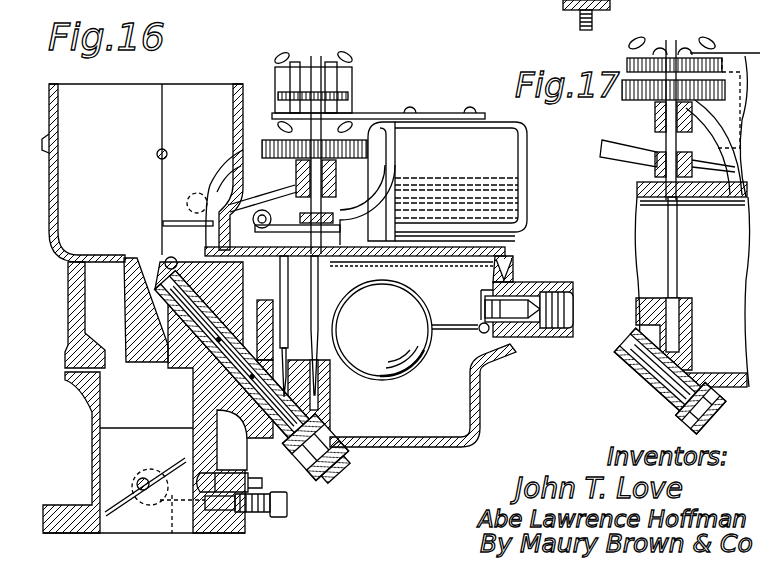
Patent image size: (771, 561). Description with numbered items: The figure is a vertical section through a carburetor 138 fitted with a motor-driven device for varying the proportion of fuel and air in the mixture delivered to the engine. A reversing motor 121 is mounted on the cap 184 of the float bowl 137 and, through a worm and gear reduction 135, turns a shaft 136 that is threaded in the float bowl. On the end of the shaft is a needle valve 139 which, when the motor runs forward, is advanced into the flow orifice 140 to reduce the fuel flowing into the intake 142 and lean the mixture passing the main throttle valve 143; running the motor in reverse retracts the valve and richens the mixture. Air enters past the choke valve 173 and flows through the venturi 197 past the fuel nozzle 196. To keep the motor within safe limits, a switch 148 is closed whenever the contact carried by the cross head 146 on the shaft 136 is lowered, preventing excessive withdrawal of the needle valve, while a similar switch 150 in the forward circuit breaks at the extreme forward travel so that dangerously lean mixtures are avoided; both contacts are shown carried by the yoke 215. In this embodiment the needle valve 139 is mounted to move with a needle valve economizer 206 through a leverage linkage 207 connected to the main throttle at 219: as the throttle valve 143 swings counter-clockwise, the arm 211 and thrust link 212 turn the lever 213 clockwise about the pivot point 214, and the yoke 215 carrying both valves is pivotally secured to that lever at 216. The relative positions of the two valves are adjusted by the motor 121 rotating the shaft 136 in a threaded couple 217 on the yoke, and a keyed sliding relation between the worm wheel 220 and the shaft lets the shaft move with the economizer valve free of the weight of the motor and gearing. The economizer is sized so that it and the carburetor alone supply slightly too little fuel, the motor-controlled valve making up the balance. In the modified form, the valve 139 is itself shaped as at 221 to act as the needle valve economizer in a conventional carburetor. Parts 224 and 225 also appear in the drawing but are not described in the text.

In FIG. 16, the motor 121 is at (437, 132).
In FIG. 17, the motor 121 is at (745, 62).
In FIG. 16, the worm and gear reduction 135 is at (240, 118).
In FIG. 16, the shaft 136 is at (340, 203).
In FIG. 16, the float bowl 137 is at (482, 410).
In FIG. 16, the carburetor 138 is at (65, 306).
In FIG. 16, the needle valve 139 is at (317, 332).
In FIG. 17, the needle valve 139 is at (580, 22).
In FIG. 16, the flow orifice 140 is at (318, 398).
In FIG. 16, the intake 142 is at (100, 418).
In FIG. 16, the main throttle valve 143 is at (165, 470).
In FIG. 16, the cross head 146 is at (278, 95).
In FIG. 16, the switch 148 is at (332, 80).
In FIG. 16, the switch 150 is at (298, 76).
In FIG. 16, the choke valve 173 is at (160, 112).
In FIG. 16, the cap 184 is at (512, 256).
In FIG. 16, the fuel nozzle 196 is at (158, 262).
In FIG. 16, the venturi 197 is at (135, 362).
In FIG. 16, the needle valve economizer 206 is at (289, 300).
In FIG. 17, the needle valve economizer 206 is at (678, 252).
In FIG. 16, the leverage linkage 207 is at (230, 162).
In FIG. 16, the arm 211 is at (175, 525).
In FIG. 16, the thrust link 212 is at (188, 209).
In FIG. 16, the lever 213 is at (256, 204).
In FIG. 17, the lever 213 is at (632, 156).
In FIG. 16, the pivot point 214 is at (352, 215).
In FIG. 17, the pivot point 214 is at (655, 152).
In FIG. 16, the yoke 215 is at (272, 210).
In FIG. 16, the pivotal connection 216 is at (355, 234).
In FIG. 16, the threaded couple 217 is at (380, 187).
In FIG. 16, the throttle connection 219 is at (150, 505).
In FIG. 16, the worm wheel 220 is at (367, 135).
In FIG. 17, the economizer shaped portion 221 is at (680, 300).
In FIG. 17, the nut 224 is at (610, 3).
In FIG. 17, the screw 225 is at (563, 3).